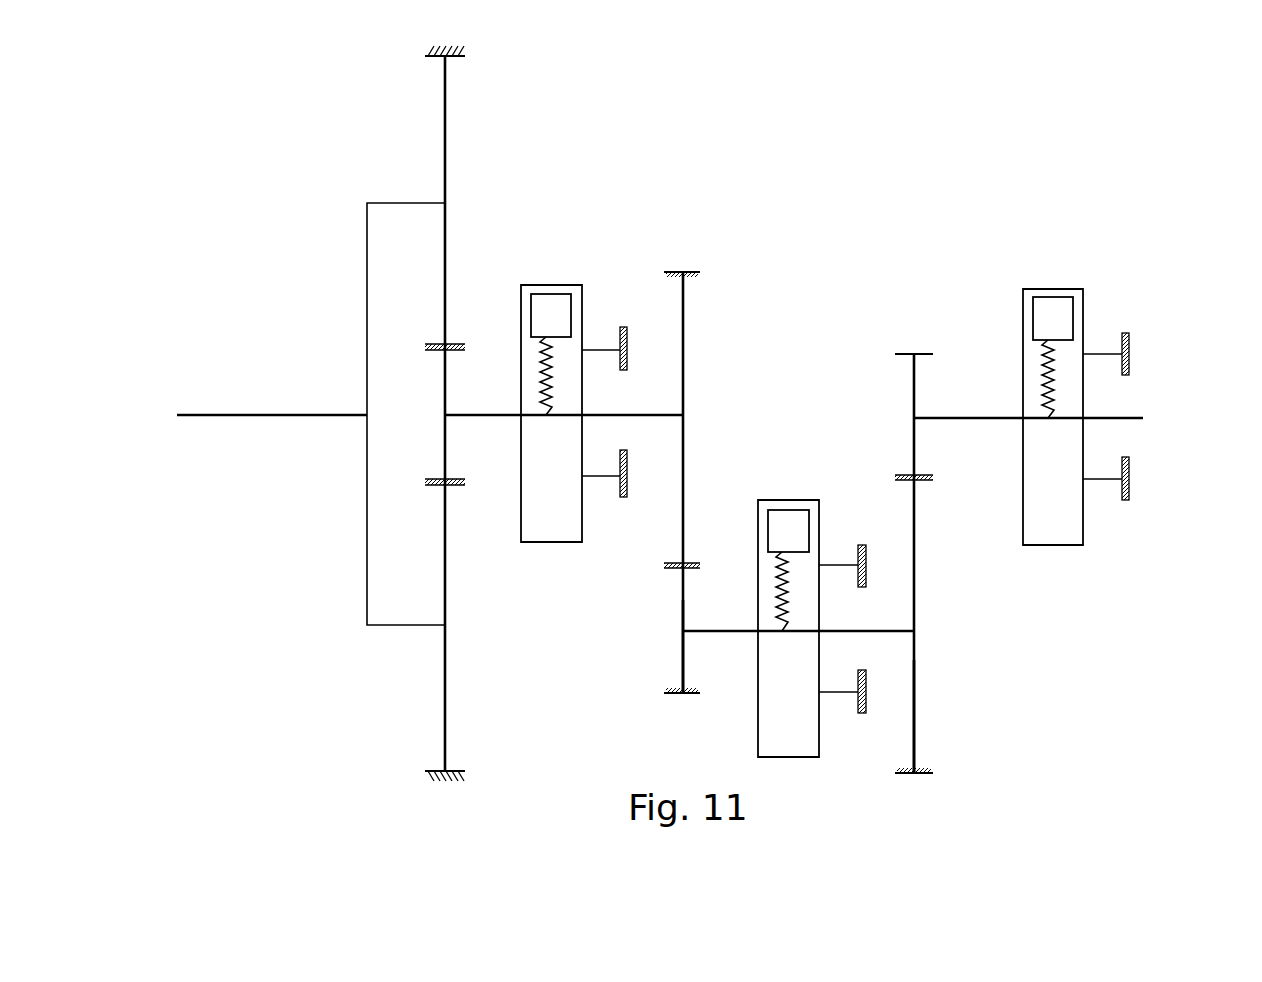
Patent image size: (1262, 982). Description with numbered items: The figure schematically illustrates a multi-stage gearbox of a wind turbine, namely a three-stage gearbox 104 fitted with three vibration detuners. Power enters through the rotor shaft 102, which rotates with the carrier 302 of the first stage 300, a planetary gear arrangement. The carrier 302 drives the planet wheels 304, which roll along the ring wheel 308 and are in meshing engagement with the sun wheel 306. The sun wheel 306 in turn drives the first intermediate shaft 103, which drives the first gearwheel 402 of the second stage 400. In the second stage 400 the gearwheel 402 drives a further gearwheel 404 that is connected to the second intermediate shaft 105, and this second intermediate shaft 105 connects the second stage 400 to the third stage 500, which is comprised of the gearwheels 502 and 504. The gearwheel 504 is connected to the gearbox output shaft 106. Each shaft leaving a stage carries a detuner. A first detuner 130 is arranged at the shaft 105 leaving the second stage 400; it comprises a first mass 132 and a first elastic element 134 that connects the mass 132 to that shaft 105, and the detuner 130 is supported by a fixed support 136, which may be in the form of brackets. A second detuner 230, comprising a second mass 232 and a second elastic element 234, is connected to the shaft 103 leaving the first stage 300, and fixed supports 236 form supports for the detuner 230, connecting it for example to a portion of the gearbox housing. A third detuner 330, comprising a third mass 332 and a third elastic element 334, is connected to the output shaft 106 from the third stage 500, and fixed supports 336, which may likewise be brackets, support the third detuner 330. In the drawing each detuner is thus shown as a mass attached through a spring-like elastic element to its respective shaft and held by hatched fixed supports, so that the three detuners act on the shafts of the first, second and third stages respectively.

The rotor shaft 102 is at (256, 413).
The first intermediate shaft 103 is at (665, 418).
The three-stage gearbox 104 is at (775, 112).
The second intermediate shaft 105 is at (904, 634).
The gearbox output shaft 106 is at (948, 422).
The first detuner 130 is at (869, 599).
The first mass 132 is at (809, 534).
The first elastic element 134 is at (820, 578).
The fixed support 136 is at (866, 556).
The second detuner 230 is at (633, 382).
The second mass 232 is at (582, 308).
The second elastic element 234 is at (552, 380).
The fixed supports 236 is at (628, 336).
The first stage 300 is at (505, 168).
The carrier 302 is at (366, 226).
The planet wheels 304 is at (444, 131).
The sun wheel 306 is at (447, 355).
The ring wheel 308 is at (430, 50).
The third detuner 330 is at (1133, 382).
The third mass 332 is at (1073, 324).
The third elastic element 334 is at (1084, 364).
The fixed supports 336 is at (1129, 344).
The second stage 400 is at (744, 344).
The first gearwheel 402 is at (685, 330).
The further gearwheel 404 is at (682, 598).
The third stage 500 is at (882, 404).
The gearwheel 502 is at (917, 686).
The gearwheel 504 is at (917, 394).